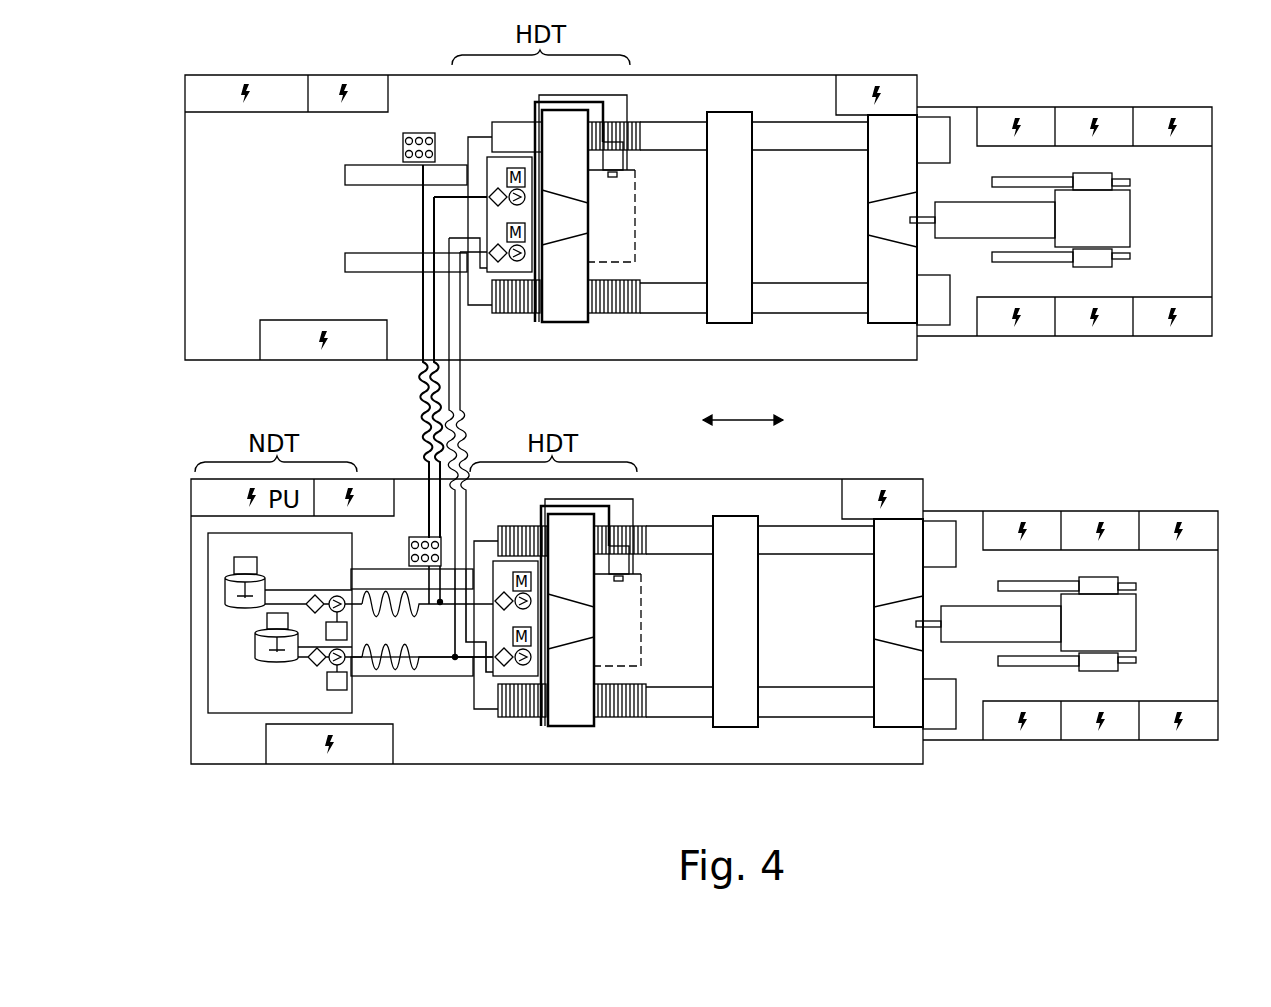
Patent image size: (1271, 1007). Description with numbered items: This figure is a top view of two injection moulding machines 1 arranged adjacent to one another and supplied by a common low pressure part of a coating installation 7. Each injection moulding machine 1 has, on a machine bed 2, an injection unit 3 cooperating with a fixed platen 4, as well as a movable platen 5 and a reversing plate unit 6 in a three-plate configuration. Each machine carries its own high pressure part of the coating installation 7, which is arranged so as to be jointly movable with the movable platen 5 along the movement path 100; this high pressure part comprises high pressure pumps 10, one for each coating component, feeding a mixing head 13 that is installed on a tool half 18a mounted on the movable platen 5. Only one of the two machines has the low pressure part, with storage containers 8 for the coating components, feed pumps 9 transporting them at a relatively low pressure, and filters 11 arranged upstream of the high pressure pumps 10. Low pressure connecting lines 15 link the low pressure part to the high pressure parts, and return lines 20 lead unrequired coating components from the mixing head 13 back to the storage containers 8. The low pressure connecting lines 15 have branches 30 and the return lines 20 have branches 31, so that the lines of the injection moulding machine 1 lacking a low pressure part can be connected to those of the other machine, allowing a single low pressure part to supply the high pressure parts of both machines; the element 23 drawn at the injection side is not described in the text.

The injection moulding machine 1 is at (953, 90).
The machine bed 2 is at (702, 90).
The injection unit 3 is at (1115, 220).
The fixed platen 4 is at (905, 153).
The movable platen 5 is at (578, 317).
The reversing plate unit 6 is at (740, 125).
The coating installation 7 is at (218, 765).
The storage container 8 is at (255, 645).
The feed pump 9 is at (328, 660).
The high pressure pump 10 is at (587, 672).
The filter 11 is at (470, 662).
The mixing head 13 is at (673, 515).
The low pressure connecting line 15 is at (433, 337).
The tool half 18a is at (635, 262).
The return line 20 is at (423, 323).
The nozzle 23 is at (560, 223).
The branch 30 is at (455, 660).
The branch 31 is at (440, 645).
The movement path 100 is at (771, 415).